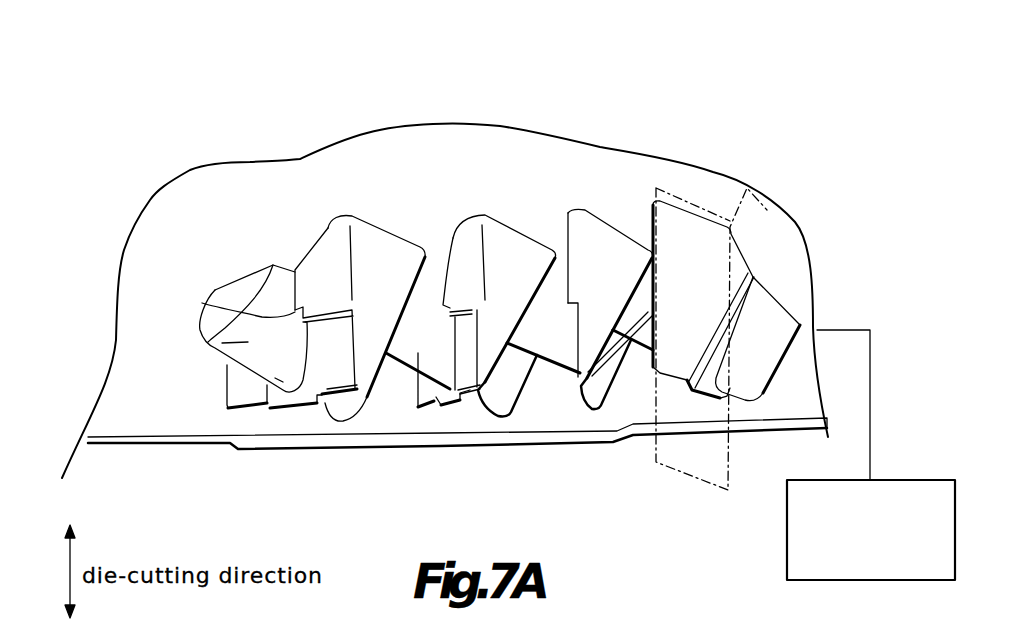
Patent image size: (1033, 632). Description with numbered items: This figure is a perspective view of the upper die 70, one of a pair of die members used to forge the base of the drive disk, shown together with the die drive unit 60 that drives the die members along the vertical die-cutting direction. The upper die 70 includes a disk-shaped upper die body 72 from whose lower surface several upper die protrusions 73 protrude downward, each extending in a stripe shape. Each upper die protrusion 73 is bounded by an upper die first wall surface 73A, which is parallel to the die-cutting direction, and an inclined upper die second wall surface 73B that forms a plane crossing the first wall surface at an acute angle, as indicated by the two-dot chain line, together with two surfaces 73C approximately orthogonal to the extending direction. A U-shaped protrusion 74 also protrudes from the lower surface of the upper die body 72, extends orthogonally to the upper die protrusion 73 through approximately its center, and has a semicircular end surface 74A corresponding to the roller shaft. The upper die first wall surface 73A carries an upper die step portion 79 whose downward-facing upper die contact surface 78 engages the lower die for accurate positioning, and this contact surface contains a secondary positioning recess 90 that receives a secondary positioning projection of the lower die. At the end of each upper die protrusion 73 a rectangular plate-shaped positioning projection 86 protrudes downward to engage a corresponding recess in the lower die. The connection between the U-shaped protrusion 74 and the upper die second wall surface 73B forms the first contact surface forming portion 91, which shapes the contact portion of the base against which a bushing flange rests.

The upper die 70 is at (742, 167).
The upper die body 72 is at (143, 400).
The upper die protrusion 73 is at (373, 240).
The upper die first wall surface 73A is at (470, 255).
The upper die second wall surface 73B is at (398, 302).
The surface 73C is at (692, 227).
The U-shaped protrusion 74 is at (360, 418).
The end surface 74A is at (213, 346).
The upper die contact surface 78 is at (342, 317).
The upper die step portion 79 is at (368, 304).
The positioning projection 86 is at (290, 417).
The secondary positioning recess 90 is at (202, 303).
The first contact surface forming portion 91 is at (749, 318).
The die drive unit 60 is at (915, 480).